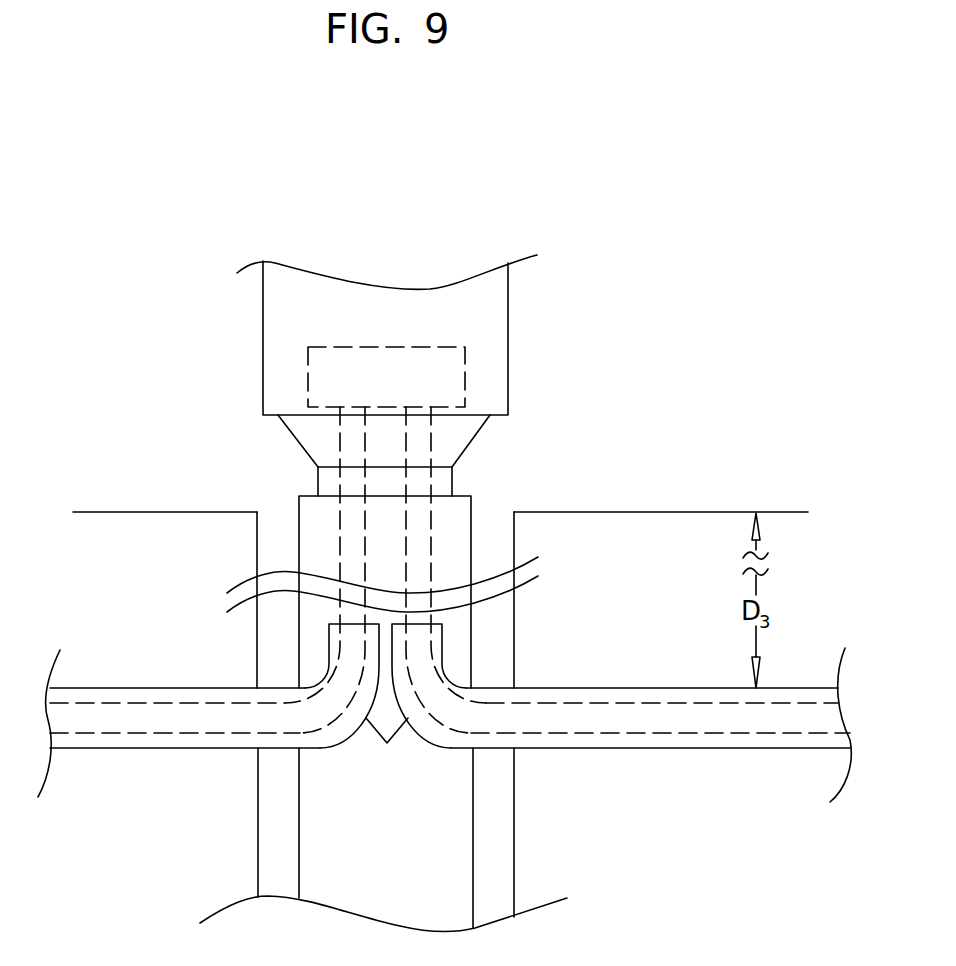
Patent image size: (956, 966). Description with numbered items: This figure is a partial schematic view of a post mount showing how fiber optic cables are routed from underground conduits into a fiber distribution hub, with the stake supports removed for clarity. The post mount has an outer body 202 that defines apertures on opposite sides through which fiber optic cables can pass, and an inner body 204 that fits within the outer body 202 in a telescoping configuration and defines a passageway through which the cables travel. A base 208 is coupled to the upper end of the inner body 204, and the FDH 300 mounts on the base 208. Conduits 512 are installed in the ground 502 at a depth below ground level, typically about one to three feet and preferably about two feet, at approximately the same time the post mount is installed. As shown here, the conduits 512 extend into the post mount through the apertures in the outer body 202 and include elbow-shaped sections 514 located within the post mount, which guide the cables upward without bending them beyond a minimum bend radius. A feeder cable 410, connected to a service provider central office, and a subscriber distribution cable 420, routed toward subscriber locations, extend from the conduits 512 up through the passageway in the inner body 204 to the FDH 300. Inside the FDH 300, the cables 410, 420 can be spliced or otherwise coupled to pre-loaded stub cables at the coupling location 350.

The fiber distribution hub 300 is at (508, 323).
The coupling location 350 is at (357, 389).
The base 208 is at (455, 442).
The inner body 204 is at (323, 476).
The subscriber distribution cable 420 is at (430, 477).
The feeder cable 410 is at (340, 532).
The ground 502 is at (697, 511).
The conduits 512 is at (148, 686).
The elbow-shaped sections 514 is at (391, 747).
The outer body 202 is at (363, 860).